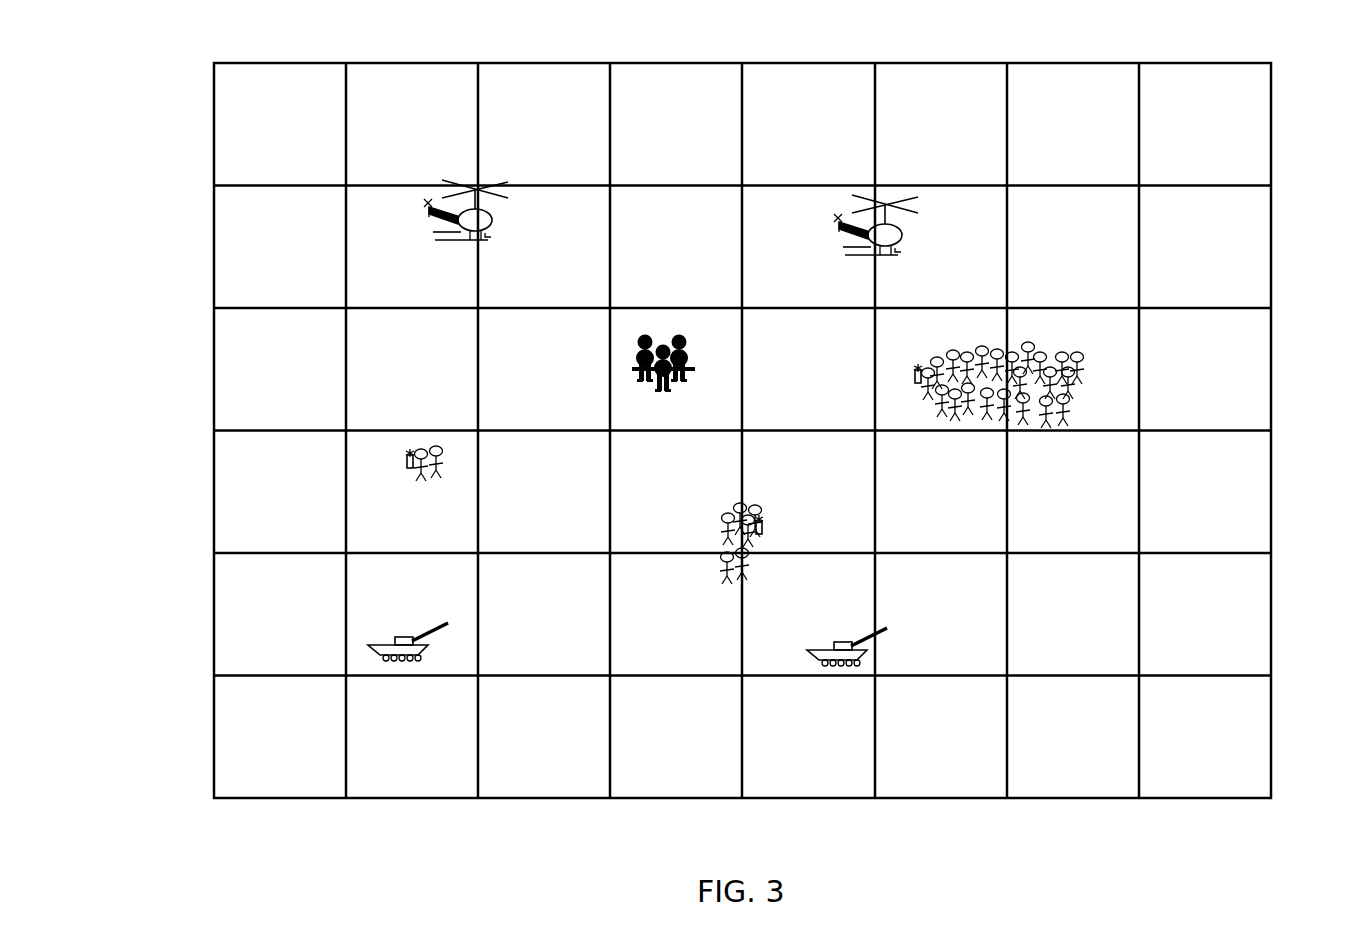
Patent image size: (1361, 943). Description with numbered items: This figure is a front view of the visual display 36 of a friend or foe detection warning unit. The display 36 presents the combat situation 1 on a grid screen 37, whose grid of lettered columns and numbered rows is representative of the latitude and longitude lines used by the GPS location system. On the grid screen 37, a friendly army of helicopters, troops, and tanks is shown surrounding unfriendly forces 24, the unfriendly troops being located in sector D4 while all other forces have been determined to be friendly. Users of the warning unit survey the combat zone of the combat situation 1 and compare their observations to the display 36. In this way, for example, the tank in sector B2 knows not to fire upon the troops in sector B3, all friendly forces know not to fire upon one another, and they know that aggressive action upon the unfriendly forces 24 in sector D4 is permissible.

The combat situation 1 is at (1041, 168).
The unfriendly forces 24 is at (688, 329).
The display 36 is at (1285, 81).
The grid screen 37 is at (1239, 158).